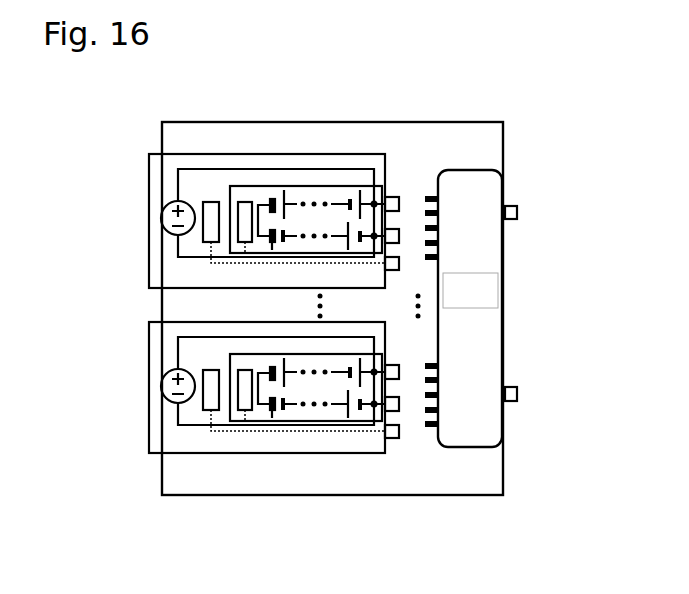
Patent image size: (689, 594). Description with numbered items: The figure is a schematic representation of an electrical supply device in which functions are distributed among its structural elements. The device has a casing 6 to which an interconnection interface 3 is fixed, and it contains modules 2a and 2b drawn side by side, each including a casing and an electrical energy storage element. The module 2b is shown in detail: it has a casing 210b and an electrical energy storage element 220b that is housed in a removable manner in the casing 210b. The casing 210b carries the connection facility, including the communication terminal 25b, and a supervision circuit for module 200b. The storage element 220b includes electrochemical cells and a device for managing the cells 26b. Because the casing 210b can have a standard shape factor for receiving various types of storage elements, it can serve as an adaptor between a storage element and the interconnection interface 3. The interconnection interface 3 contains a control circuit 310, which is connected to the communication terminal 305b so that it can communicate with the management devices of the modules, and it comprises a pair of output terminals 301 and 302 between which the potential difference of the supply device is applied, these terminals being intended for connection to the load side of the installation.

The casing 6 is at (162, 308).
The module 2a is at (149, 221).
The module 2b is at (136, 388).
The supervision circuit for module 200b is at (140, 368).
The device for managing the cells 26b is at (228, 351).
The casing 210b is at (267, 431).
The electrical energy storage element 220b is at (311, 447).
The communication terminal 25b is at (413, 472).
The communication terminal 305b is at (427, 440).
The interconnection interface 3 is at (470, 332).
The control circuit 310 is at (493, 304).
The output terminal 301 is at (507, 206).
The output terminal 302 is at (513, 402).